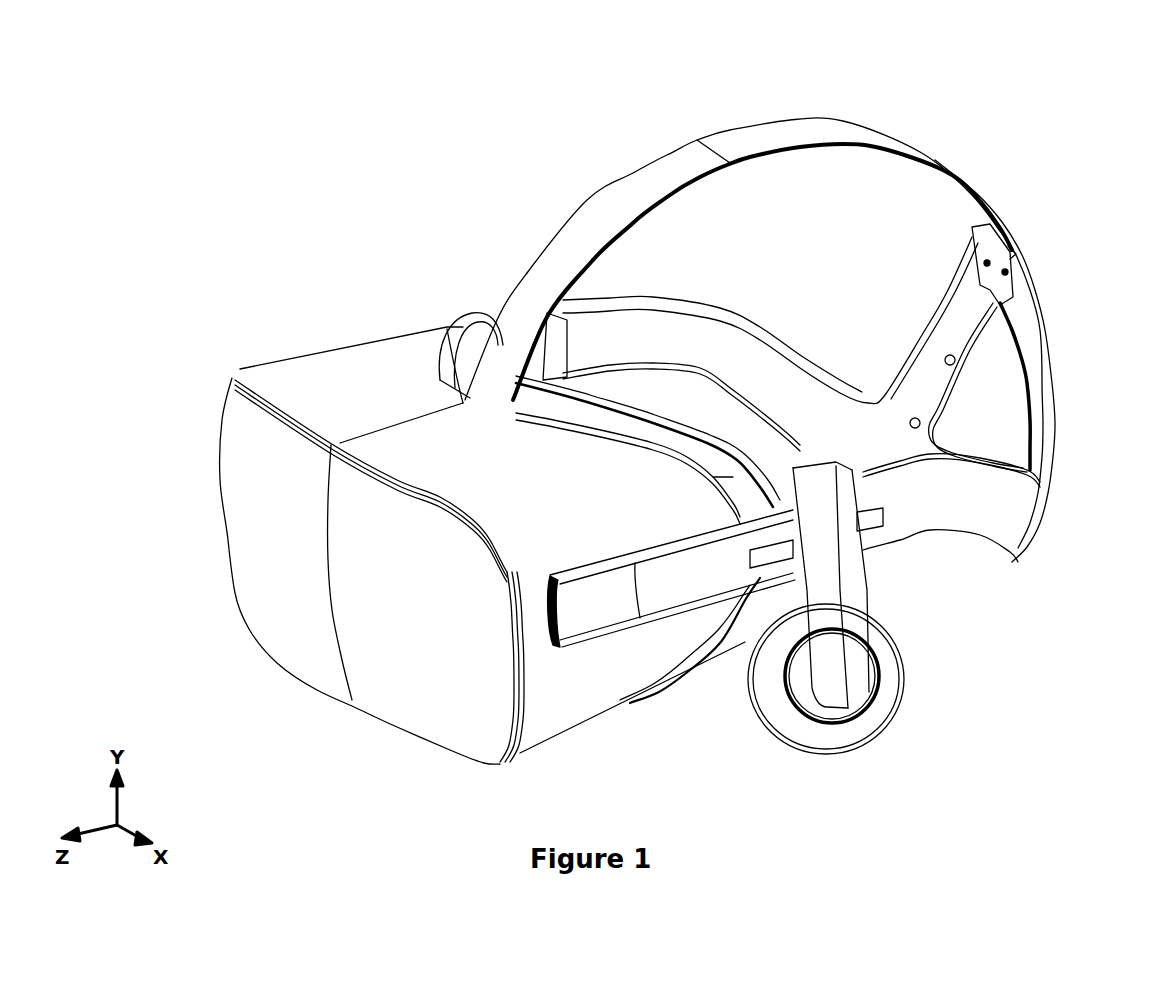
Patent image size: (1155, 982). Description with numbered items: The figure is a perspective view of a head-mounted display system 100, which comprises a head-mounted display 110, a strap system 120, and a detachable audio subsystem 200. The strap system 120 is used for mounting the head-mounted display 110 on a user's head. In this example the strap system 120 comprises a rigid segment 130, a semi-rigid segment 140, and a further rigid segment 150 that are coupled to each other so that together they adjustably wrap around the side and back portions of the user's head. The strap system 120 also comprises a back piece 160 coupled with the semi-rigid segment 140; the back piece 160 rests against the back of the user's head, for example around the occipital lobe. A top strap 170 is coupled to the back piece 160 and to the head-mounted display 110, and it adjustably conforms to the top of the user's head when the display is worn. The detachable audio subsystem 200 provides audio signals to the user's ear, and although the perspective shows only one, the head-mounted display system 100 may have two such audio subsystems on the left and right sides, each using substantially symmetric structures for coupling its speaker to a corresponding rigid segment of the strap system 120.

The head-mounted display system 100 is at (139, 114).
The head-mounted display 110 is at (341, 362).
The strap system 120 is at (1009, 106).
The rigid segment 130 is at (548, 294).
The semi-rigid segment 140 is at (772, 345).
The rigid segment 150 is at (623, 620).
The back piece 160 is at (1037, 332).
The top strap 170 is at (806, 138).
The detachable audio subsystem 200 is at (860, 762).